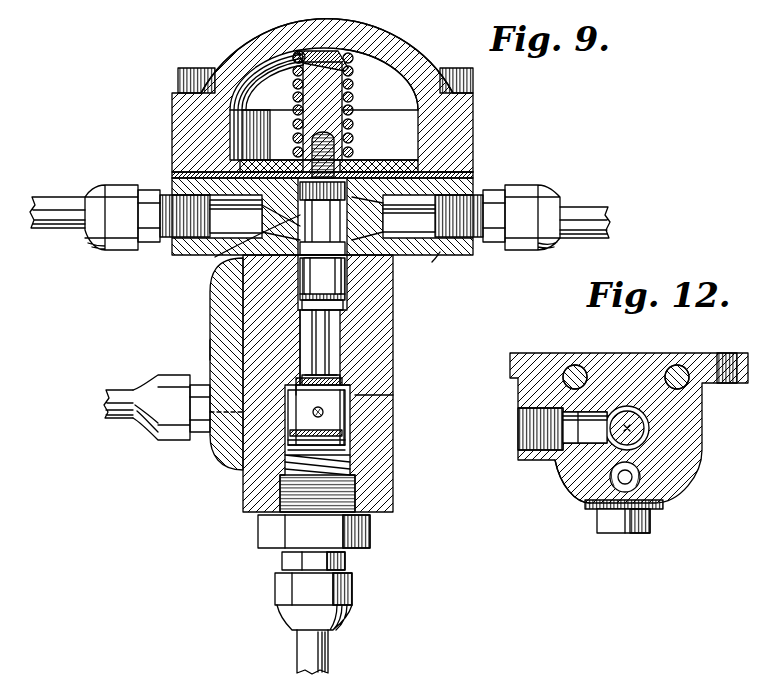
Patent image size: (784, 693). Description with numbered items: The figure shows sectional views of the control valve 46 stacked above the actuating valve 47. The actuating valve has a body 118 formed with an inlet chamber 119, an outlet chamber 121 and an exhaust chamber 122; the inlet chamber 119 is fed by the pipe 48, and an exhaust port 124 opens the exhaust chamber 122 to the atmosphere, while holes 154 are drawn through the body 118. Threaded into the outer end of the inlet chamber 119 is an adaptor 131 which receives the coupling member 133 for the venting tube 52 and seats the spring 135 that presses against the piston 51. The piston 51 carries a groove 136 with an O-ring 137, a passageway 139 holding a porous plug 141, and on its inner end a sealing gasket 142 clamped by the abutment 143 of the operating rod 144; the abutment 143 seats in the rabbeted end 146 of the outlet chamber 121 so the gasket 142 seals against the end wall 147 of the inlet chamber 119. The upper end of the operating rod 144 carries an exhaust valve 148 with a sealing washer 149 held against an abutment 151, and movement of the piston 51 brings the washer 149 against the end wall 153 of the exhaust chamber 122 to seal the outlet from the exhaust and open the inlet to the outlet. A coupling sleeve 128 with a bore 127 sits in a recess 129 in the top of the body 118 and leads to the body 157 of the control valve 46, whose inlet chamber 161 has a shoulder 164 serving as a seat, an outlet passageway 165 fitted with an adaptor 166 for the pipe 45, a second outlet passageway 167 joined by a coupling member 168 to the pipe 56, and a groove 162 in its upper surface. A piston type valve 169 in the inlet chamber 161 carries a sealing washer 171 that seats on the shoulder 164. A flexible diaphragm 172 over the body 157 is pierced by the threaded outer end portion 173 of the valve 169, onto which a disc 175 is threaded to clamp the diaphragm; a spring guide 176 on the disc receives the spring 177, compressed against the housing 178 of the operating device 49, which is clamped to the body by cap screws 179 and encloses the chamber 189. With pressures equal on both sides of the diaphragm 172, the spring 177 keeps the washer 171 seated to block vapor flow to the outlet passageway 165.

In FIG. 9, the operating device 49 is at (268, 31).
In FIG. 9, the housing 178 is at (244, 62).
In FIG. 9, the cap screws 179 is at (179, 78).
In FIG. 9, the chamber 189 is at (402, 92).
In FIG. 9, the spring guide 176 is at (300, 129).
In FIG. 9, the threaded outer end portion 173 is at (300, 151).
In FIG. 9, the spring 177 is at (352, 97).
In FIG. 9, the sealing washer 171 is at (336, 166).
In FIG. 9, the disc 175 is at (380, 165).
In FIG. 9, the flexible diaphragm 172 is at (190, 172).
In FIG. 9, the groove 162 is at (470, 172).
In FIG. 9, the control valve 46 is at (485, 192).
In FIG. 9, the outlet passageway 165 is at (212, 256).
In FIG. 9, the second outlet passageway 167 is at (418, 248).
In FIG. 9, the body of the control valve 157 is at (438, 263).
In FIG. 9, the inlet chamber 161 is at (211, 216).
In FIG. 9, the shoulder 164 is at (433, 216).
In FIG. 9, the adaptor 166 is at (112, 252).
In FIG. 9, the pipe 45 is at (60, 196).
In FIG. 9, the coupling member 168 is at (530, 190).
In FIG. 9, the pipe 56 is at (598, 207).
In FIG. 9, the actuating valve 47 is at (401, 321).
In FIG. 12, the actuating valve 47 is at (708, 458).
In FIG. 9, the piston type valve 169 is at (212, 262).
In FIG. 9, the exhaust valve 148 is at (332, 285).
In FIG. 12, the exhaust valve 148 is at (632, 413).
In FIG. 9, the end wall of the exhaust chamber 153 is at (333, 313).
In FIG. 9, the sealing washer 149 is at (303, 293).
In FIG. 9, the exhaust chamber 122 is at (302, 310).
In FIG. 9, the abutment 151 is at (297, 328).
In FIG. 9, the operating rod 144 is at (323, 347).
In FIG. 12, the operating rod 144 is at (630, 429).
In FIG. 9, the rabbeted end 146 is at (210, 350).
In FIG. 9, the outlet chamber 121 is at (300, 370).
In FIG. 9, the abutment 143 is at (330, 375).
In FIG. 9, the sealing gasket 142 is at (337, 379).
In FIG. 9, the end wall of the inlet chamber 147 is at (298, 378).
In FIG. 9, the piston 51 is at (343, 387).
In FIG. 9, the plug 141 is at (348, 391).
In FIG. 9, the passageway 139 is at (321, 412).
In FIG. 9, the valve body 118 is at (377, 413).
In FIG. 12, the valve body 118 is at (595, 452).
In FIG. 9, the inlet chamber 119 is at (296, 390).
In FIG. 9, the groove 136 is at (345, 428).
In FIG. 9, the O-ring 137 is at (336, 437).
In FIG. 9, the spring 135 is at (350, 461).
In FIG. 9, the pipe 48 is at (127, 418).
In FIG. 9, the adaptor 131 is at (370, 539).
In FIG. 9, the coupling member 133 is at (352, 585).
In FIG. 9, the venting tube 52 is at (328, 652).
In FIG. 12, the bolt holes 154 is at (578, 365).
In FIG. 12, the exhaust port 124 is at (577, 438).
In FIG. 12, the bore 127 is at (632, 478).
In FIG. 12, the coupling sleeve 128 is at (657, 505).
In FIG. 12, the recess 129 is at (594, 510).